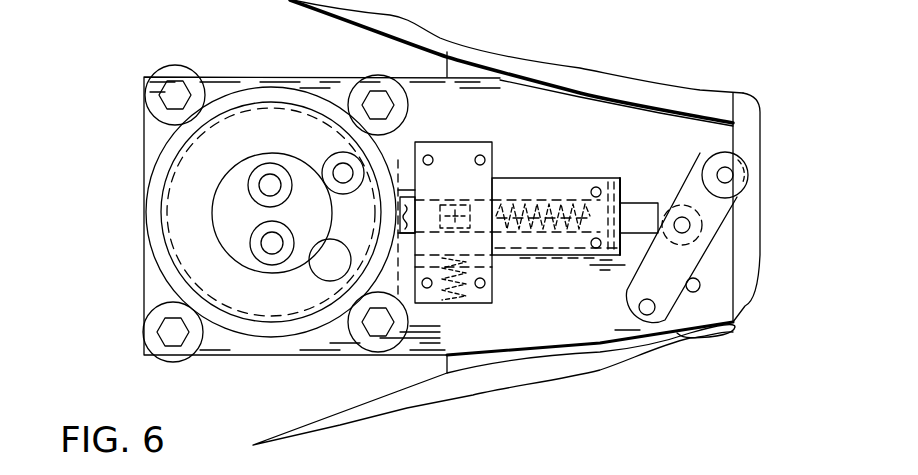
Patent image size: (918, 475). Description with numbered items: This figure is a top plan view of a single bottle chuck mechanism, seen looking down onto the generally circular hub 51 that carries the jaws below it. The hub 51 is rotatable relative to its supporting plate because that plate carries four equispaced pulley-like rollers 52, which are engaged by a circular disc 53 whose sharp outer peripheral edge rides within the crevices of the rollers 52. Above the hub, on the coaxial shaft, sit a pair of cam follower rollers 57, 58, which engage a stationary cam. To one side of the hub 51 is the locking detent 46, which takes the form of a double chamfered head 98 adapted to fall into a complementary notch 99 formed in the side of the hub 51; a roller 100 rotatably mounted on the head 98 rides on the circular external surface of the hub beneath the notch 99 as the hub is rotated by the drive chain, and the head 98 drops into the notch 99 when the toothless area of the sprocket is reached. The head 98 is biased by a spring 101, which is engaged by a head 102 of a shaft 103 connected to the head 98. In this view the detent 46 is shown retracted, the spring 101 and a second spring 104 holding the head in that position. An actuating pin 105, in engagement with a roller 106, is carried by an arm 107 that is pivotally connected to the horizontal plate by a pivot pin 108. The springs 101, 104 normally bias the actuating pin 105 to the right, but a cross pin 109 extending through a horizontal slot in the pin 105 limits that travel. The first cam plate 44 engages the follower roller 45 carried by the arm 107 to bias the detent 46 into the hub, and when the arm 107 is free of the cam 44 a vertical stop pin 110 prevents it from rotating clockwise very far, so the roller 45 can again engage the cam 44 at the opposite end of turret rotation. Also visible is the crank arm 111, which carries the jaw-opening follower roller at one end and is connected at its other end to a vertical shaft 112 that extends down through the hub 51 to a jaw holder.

The first cam plate 44 is at (557, 460).
The follower roller 45 is at (737, 170).
The detent 46 is at (411, 186).
The hub 51 is at (262, 330).
The rollers 52 is at (150, 82).
The disc 53 is at (150, 248).
The cam follower roller 57 is at (270, 185).
The cam follower roller 58 is at (272, 243).
The double chamfered head 98 is at (400, 245).
The notch 99 is at (376, 150).
The roller 100 is at (417, 200).
The spring 101 is at (575, 200).
The head 102 is at (543, 200).
The shaft 103 is at (505, 255).
The second spring 104 is at (512, 200).
The actuating pin 105 is at (634, 217).
The roller 106 is at (700, 233).
The arm 107 is at (677, 333).
The pivot pin 108 is at (647, 307).
The cross pin 109 is at (615, 180).
The vertical stop pin 110 is at (699, 290).
The crank arm 111 is at (343, 195).
The vertical shaft 112 is at (330, 266).